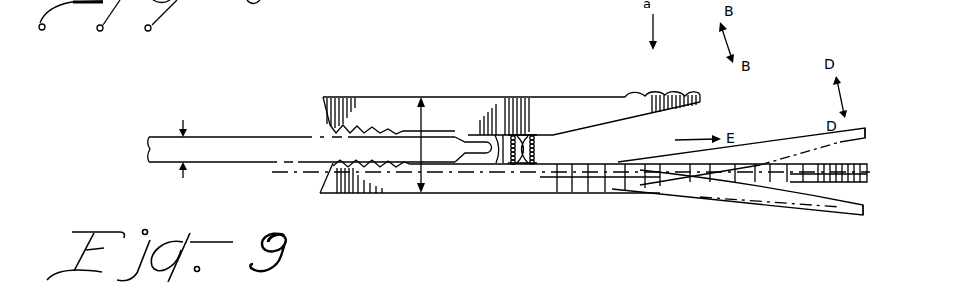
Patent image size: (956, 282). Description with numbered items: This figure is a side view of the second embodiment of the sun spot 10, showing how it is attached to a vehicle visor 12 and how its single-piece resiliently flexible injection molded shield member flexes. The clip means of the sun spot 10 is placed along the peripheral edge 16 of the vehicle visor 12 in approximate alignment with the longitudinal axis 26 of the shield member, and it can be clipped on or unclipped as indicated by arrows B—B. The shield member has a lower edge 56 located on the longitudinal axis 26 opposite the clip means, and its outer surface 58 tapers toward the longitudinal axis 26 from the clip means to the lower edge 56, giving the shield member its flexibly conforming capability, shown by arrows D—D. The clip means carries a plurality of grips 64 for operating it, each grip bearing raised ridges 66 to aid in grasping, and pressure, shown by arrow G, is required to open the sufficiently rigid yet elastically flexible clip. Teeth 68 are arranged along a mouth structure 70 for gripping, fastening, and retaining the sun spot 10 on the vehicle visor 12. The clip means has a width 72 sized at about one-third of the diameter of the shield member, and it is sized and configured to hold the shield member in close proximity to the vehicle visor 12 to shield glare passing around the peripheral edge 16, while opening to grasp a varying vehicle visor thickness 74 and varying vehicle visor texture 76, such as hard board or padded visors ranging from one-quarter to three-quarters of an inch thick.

The sun spot 10 is at (433, 50).
The vehicle visor 12 is at (212, 98).
The peripheral edge 16 is at (455, 137).
The longitudinal axis 26 is at (887, 174).
The lower edge 56 is at (868, 166).
The outer surface 58 is at (632, 164).
The grips 64 is at (572, 110).
The raised ridges 66 is at (622, 97).
The teeth 68 is at (357, 97).
The mouth structure 70 is at (321, 127).
The width 72 is at (423, 145).
The vehicle visor thickness 74 is at (180, 149).
The vehicle visor texture 76 is at (208, 164).